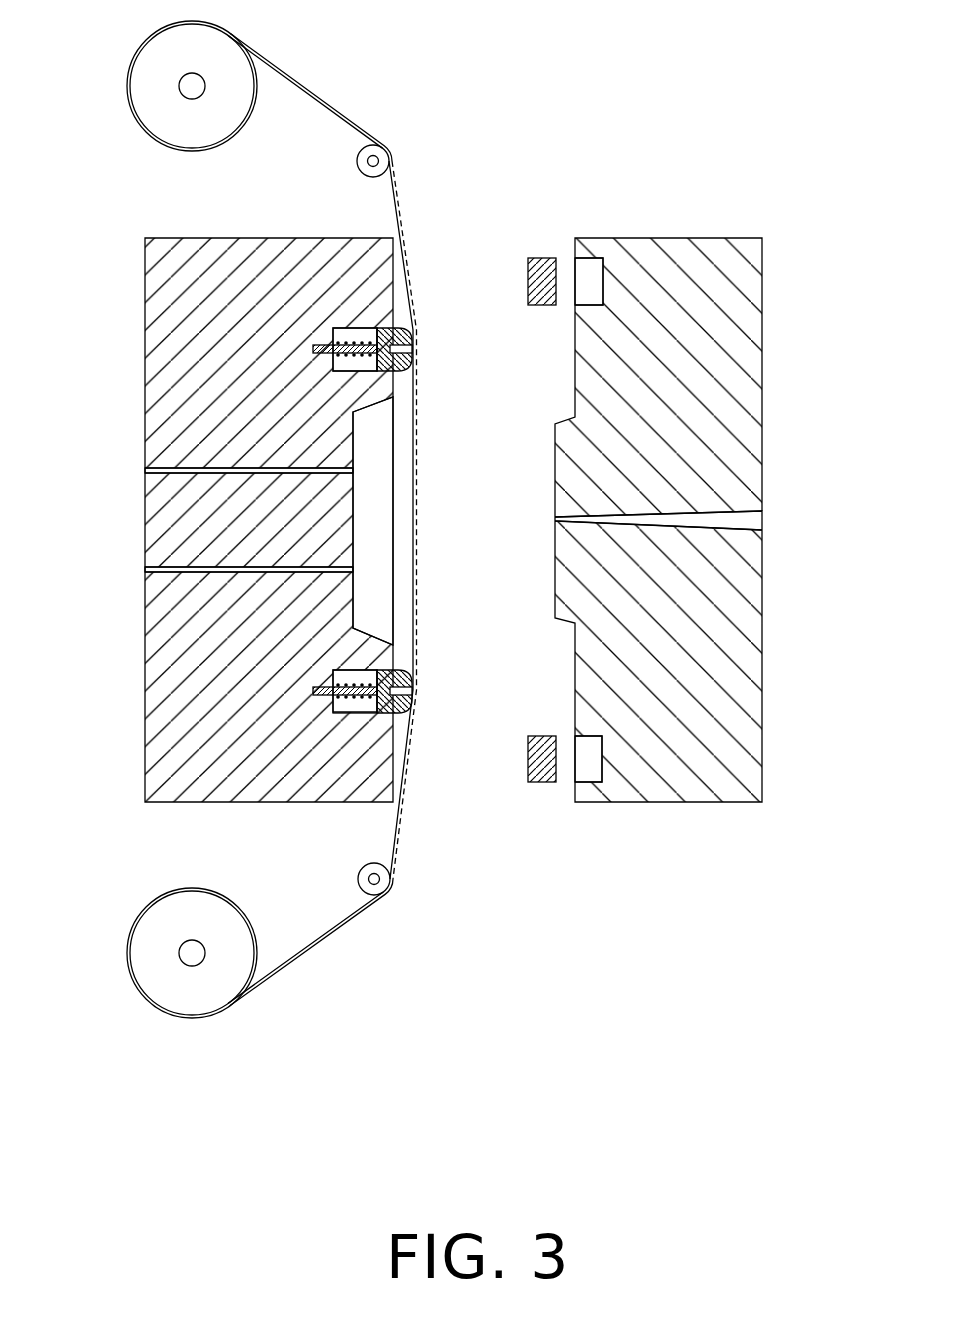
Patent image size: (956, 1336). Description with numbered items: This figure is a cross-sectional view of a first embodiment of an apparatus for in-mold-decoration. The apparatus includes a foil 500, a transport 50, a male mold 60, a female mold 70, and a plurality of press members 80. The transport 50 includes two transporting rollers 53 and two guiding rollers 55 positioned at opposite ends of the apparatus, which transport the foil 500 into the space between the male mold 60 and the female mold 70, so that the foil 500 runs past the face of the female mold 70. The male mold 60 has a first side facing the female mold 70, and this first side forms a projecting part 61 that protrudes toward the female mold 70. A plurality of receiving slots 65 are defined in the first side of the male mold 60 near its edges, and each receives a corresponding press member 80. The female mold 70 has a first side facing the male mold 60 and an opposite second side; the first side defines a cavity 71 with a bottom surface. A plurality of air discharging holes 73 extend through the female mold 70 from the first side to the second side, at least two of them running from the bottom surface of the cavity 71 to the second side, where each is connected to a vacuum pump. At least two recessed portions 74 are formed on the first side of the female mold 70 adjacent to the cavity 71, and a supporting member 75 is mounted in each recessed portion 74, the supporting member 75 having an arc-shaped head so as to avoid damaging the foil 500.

The transport 50 is at (255, 512).
The foil 500 is at (327, 100).
The transporting rollers 53 is at (166, 66).
The guiding rollers 55 is at (362, 161).
The male mold 60 is at (775, 334).
The projecting part 61 is at (550, 488).
The receiving slots 65 is at (585, 270).
The female mold 70 is at (137, 378).
The cavity 71 is at (370, 478).
The air discharging holes 73 is at (150, 471).
The recessed portions 74 is at (352, 333).
The supporting member 75 is at (408, 333).
The press members 80 is at (539, 262).